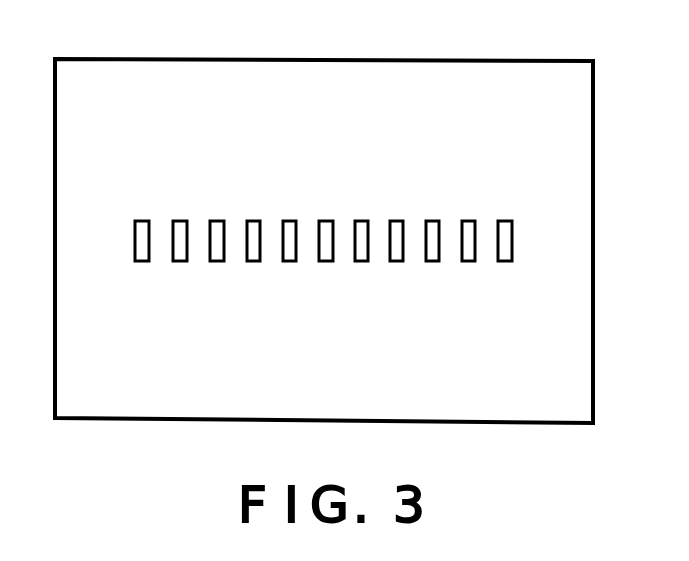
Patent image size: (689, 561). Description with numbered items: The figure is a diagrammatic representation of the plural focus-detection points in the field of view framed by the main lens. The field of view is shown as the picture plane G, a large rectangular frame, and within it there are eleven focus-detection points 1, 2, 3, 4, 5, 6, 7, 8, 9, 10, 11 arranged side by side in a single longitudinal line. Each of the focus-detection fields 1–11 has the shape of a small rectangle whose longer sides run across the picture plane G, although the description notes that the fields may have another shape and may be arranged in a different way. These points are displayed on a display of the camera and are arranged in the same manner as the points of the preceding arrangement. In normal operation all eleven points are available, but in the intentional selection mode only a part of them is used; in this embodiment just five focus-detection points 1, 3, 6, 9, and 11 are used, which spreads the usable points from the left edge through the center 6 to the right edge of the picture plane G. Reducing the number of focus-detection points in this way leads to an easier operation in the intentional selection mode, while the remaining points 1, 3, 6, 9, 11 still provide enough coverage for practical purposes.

The picture plane G is at (426, 62).
The focus-detection point 1 is at (142, 254).
The focus-detection point 2 is at (180, 254).
The focus-detection point 3 is at (217, 254).
The focus-detection point 4 is at (253, 254).
The focus-detection point 5 is at (289, 254).
The focus-detection point 6 is at (326, 254).
The focus-detection point 7 is at (361, 254).
The focus-detection point 8 is at (396, 254).
The focus-detection point 9 is at (432, 254).
The focus-detection point 10 is at (466, 254).
The focus-detection point 11 is at (504, 254).